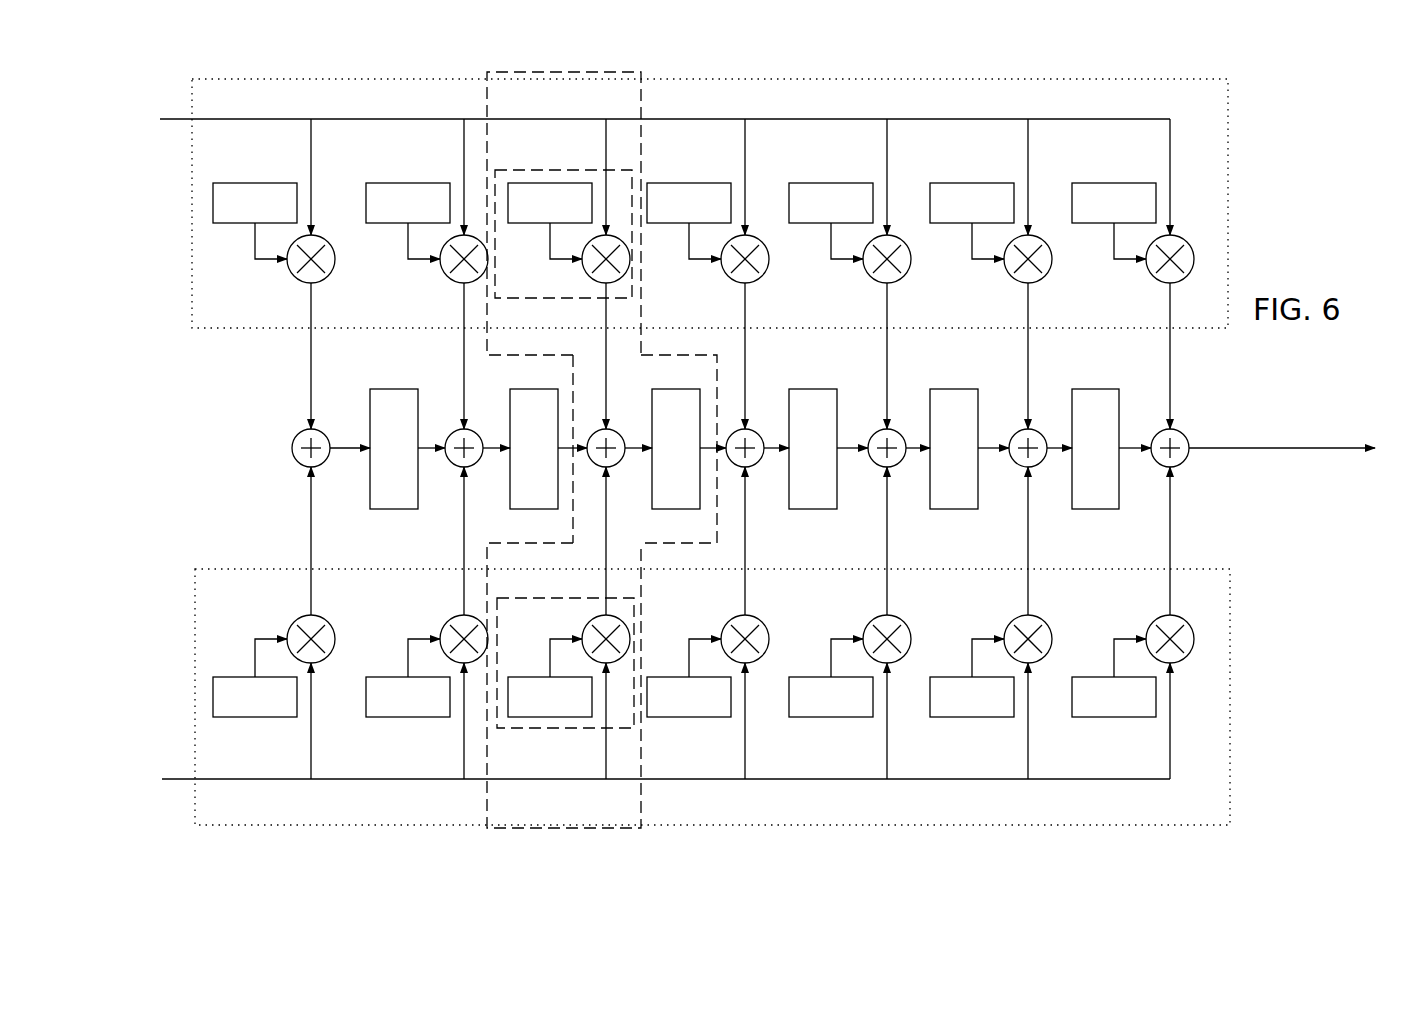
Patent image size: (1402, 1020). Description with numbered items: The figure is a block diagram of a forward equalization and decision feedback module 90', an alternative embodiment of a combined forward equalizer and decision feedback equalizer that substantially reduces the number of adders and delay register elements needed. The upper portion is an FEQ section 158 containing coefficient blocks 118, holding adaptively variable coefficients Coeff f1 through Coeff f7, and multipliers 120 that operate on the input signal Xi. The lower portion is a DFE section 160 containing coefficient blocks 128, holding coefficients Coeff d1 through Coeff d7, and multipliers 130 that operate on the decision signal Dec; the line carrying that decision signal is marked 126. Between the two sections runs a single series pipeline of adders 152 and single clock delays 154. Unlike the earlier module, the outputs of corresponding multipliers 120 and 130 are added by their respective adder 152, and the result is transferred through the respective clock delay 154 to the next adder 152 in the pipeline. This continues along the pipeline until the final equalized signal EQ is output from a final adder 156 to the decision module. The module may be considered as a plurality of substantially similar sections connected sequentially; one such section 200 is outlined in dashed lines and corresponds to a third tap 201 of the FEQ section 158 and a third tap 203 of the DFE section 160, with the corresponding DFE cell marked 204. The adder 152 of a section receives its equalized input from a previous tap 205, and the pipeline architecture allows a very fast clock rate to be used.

The forward equalization and decision feedback module 90' is at (744, 452).
The FEQ coefficient block 118 is at (234, 183).
The FEQ coefficient multiplier 120 is at (308, 282).
The decision input line (Dec) 126 is at (177, 778).
The DFE coefficient block 128 is at (245, 717).
The DFE coefficient multiplier 130 is at (311, 618).
The adder 152 is at (296, 442).
The single clock delay 154 is at (407, 509).
The final adder 156 is at (1181, 459).
The FEQ section 158 is at (1228, 148).
The DFE section 160 is at (1228, 748).
The section 200 is at (618, 168).
The third tap 201 is at (605, 119).
The third tap 203 is at (607, 779).
The feedback coefficient multiplier cell 204 is at (550, 726).
The previous tap 205 is at (575, 448).